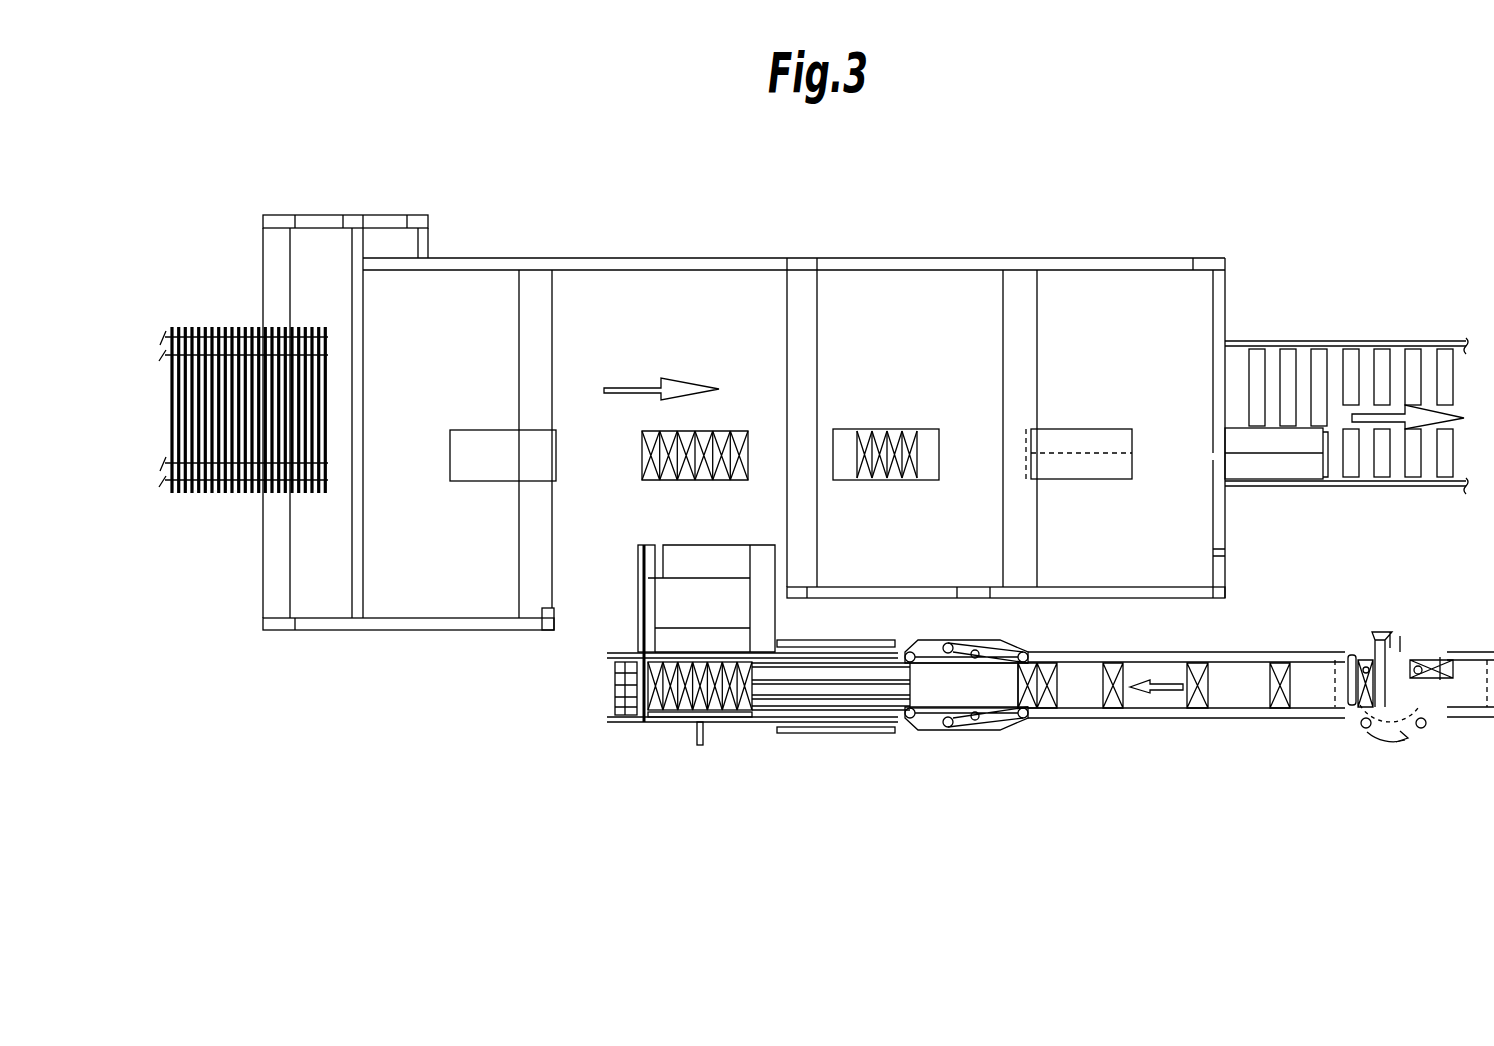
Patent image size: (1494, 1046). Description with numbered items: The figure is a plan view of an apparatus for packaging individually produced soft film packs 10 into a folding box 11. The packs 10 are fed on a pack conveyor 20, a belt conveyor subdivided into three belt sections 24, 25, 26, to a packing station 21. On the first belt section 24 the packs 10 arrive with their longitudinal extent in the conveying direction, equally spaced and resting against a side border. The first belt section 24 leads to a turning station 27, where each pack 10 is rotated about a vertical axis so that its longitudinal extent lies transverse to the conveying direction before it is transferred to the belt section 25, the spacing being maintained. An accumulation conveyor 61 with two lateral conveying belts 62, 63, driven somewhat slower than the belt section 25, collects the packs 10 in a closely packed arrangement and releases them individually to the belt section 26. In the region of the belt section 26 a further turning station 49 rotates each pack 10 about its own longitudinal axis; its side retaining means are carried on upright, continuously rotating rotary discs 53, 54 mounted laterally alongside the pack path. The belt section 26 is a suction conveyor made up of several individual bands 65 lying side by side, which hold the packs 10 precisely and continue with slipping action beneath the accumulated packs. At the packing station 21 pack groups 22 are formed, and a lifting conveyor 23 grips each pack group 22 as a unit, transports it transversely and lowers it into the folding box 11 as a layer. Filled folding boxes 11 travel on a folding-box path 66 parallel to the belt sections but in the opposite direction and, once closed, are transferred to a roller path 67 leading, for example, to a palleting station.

The pack 10 is at (1195, 707).
The folding box 11 is at (478, 427).
The pack conveyor 20 is at (1068, 770).
The packing station 21 is at (613, 617).
The pack group 22 is at (760, 693).
The lifting conveyor 23 is at (683, 705).
The first belt section 24 is at (1462, 733).
The belt section 25 is at (1195, 760).
The belt section 26 is at (728, 738).
The turning station 27 is at (1401, 605).
The turning station 49 is at (845, 742).
The rotary disc 53 is at (880, 730).
The rotary disc 54 is at (865, 642).
The accumulation conveyor 61 is at (988, 732).
The conveying belt 62 is at (1003, 640).
The conveying belt 63 is at (1008, 723).
The individual band 65 is at (615, 710).
The folding-box path 66 is at (884, 424).
The roller path 67 is at (1336, 335).